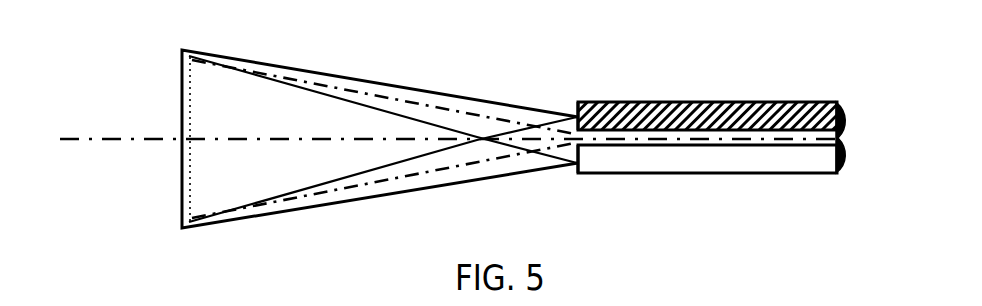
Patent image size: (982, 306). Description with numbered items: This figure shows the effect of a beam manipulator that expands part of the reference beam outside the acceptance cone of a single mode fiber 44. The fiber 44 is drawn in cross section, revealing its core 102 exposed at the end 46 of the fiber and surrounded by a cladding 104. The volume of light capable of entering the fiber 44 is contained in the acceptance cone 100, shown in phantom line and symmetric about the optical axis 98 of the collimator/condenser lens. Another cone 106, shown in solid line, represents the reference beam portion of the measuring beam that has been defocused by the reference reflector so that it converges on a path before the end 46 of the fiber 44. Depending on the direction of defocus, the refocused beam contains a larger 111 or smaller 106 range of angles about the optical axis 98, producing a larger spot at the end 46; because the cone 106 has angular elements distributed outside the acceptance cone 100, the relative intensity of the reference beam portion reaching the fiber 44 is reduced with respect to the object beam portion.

The optical axis 98 is at (75, 138).
The acceptance cone 100 is at (437, 102).
The cone 106 is at (305, 92).
The larger range of angles 111 is at (487, 180).
The end of the single mode fiber 46 is at (574, 118).
The cladding 104 is at (743, 105).
The single mode fiber 44 is at (752, 173).
The core 102 is at (840, 139).